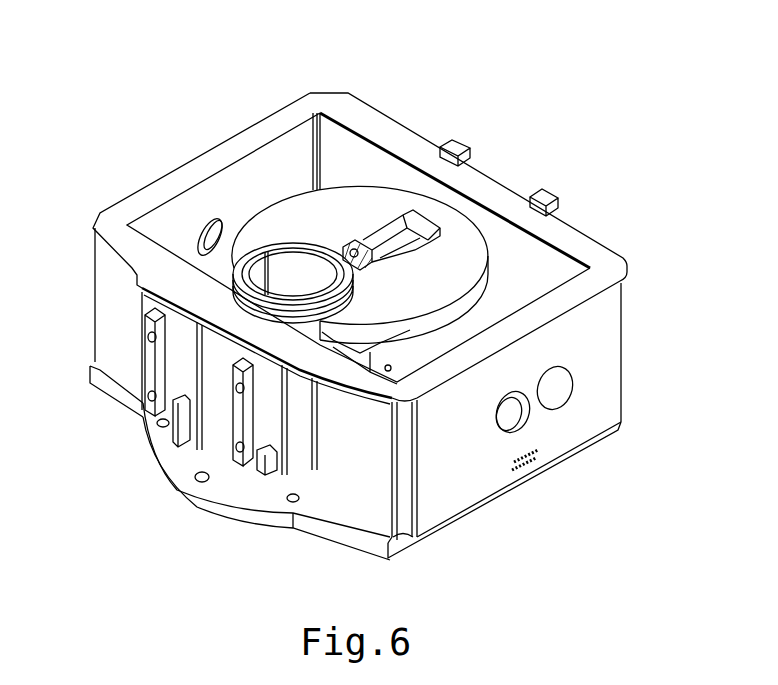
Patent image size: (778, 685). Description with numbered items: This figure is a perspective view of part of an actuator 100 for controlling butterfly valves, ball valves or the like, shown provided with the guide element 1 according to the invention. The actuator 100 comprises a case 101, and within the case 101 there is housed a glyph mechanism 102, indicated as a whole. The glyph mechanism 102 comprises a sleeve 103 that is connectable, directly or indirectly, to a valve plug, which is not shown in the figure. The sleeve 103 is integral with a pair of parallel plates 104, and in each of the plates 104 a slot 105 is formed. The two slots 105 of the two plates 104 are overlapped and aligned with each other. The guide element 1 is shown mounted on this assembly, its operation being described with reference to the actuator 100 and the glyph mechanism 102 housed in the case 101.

The actuator 100 is at (140, 99).
The case 101 is at (600, 347).
The glyph mechanism 102 is at (283, 162).
The sleeve 103 is at (283, 267).
The parallel plates 104 is at (463, 247).
The slot 105 is at (420, 225).
The guide element 1 is at (346, 228).